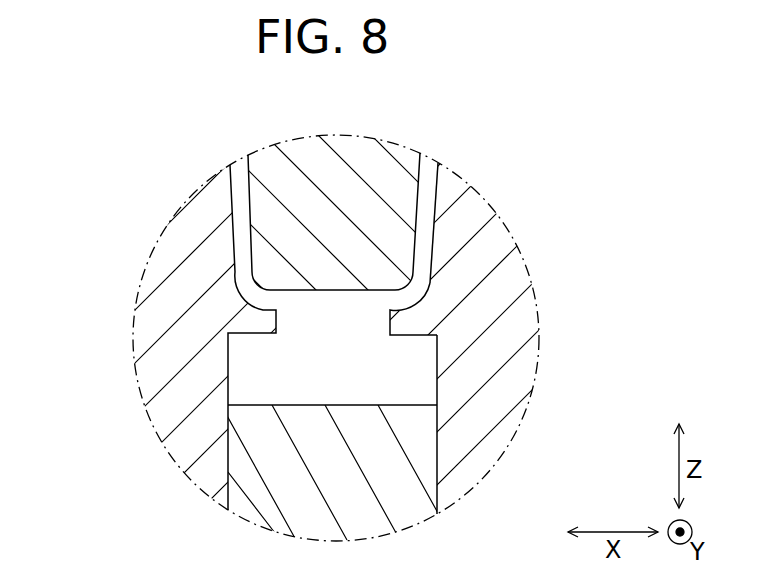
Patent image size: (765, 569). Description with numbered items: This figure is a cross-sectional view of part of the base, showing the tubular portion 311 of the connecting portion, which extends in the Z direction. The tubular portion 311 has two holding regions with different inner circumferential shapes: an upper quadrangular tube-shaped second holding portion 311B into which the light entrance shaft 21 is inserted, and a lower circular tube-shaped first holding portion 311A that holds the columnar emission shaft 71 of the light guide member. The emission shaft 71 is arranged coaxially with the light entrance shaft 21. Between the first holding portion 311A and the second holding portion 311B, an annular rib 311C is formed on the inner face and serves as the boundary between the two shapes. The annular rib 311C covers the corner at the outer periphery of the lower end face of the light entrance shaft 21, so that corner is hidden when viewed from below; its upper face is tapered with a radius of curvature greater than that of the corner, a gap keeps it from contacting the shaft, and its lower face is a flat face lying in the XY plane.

The tubular portion 311 is at (200, 220).
The first holding portion 311A is at (437, 357).
The second holding portion 311B is at (437, 194).
The annular rib 311C is at (400, 322).
The light entrance shaft 21 is at (268, 162).
The emission shaft 71 is at (415, 472).